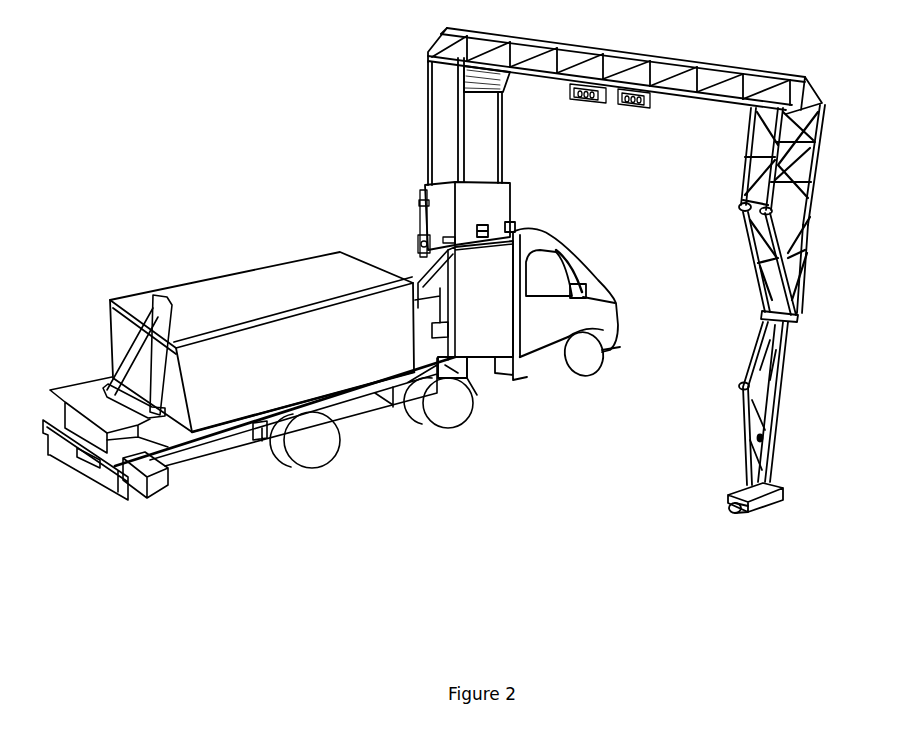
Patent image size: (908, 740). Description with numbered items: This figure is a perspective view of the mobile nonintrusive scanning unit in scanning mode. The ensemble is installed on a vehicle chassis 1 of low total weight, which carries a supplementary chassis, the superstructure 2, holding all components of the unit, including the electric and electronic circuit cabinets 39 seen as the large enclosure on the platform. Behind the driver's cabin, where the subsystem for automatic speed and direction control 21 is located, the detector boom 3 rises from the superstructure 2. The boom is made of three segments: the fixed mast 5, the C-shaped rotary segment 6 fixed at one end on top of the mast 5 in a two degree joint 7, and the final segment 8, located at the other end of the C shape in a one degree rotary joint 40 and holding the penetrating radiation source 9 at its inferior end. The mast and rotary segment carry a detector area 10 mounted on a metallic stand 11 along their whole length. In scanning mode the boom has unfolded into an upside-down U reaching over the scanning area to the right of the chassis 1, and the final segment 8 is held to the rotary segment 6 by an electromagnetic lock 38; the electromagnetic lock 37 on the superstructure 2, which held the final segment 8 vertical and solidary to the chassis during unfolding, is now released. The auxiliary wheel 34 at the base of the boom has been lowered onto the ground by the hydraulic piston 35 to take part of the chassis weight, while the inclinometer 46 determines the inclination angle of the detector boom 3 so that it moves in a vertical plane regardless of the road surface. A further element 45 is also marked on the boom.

The chassis 1 is at (308, 448).
The superstructure 2 is at (90, 400).
The detector boom 3 is at (483, 203).
The mast 5 is at (478, 297).
The rotary segment 6 is at (693, 62).
The two degree joint 7 is at (423, 243).
The final segment 8 is at (782, 398).
The penetrating radiation source 9 is at (770, 503).
The detector area 10 is at (532, 331).
The metallic stand 11 is at (532, 331).
The subsystem for automatic speed and direction control 21 is at (553, 277).
The auxiliary wheel 34 is at (447, 418).
The hydraulic piston 35 is at (477, 398).
The electromagnetic lock 37 is at (162, 305).
The electromagnetic lock 38 is at (826, 332).
The electric and electronic circuit cabinets 39 is at (245, 303).
The one degree rotary joint 40 is at (790, 320).
The sensor 45 is at (572, 98).
The inclinometer 46 is at (650, 108).